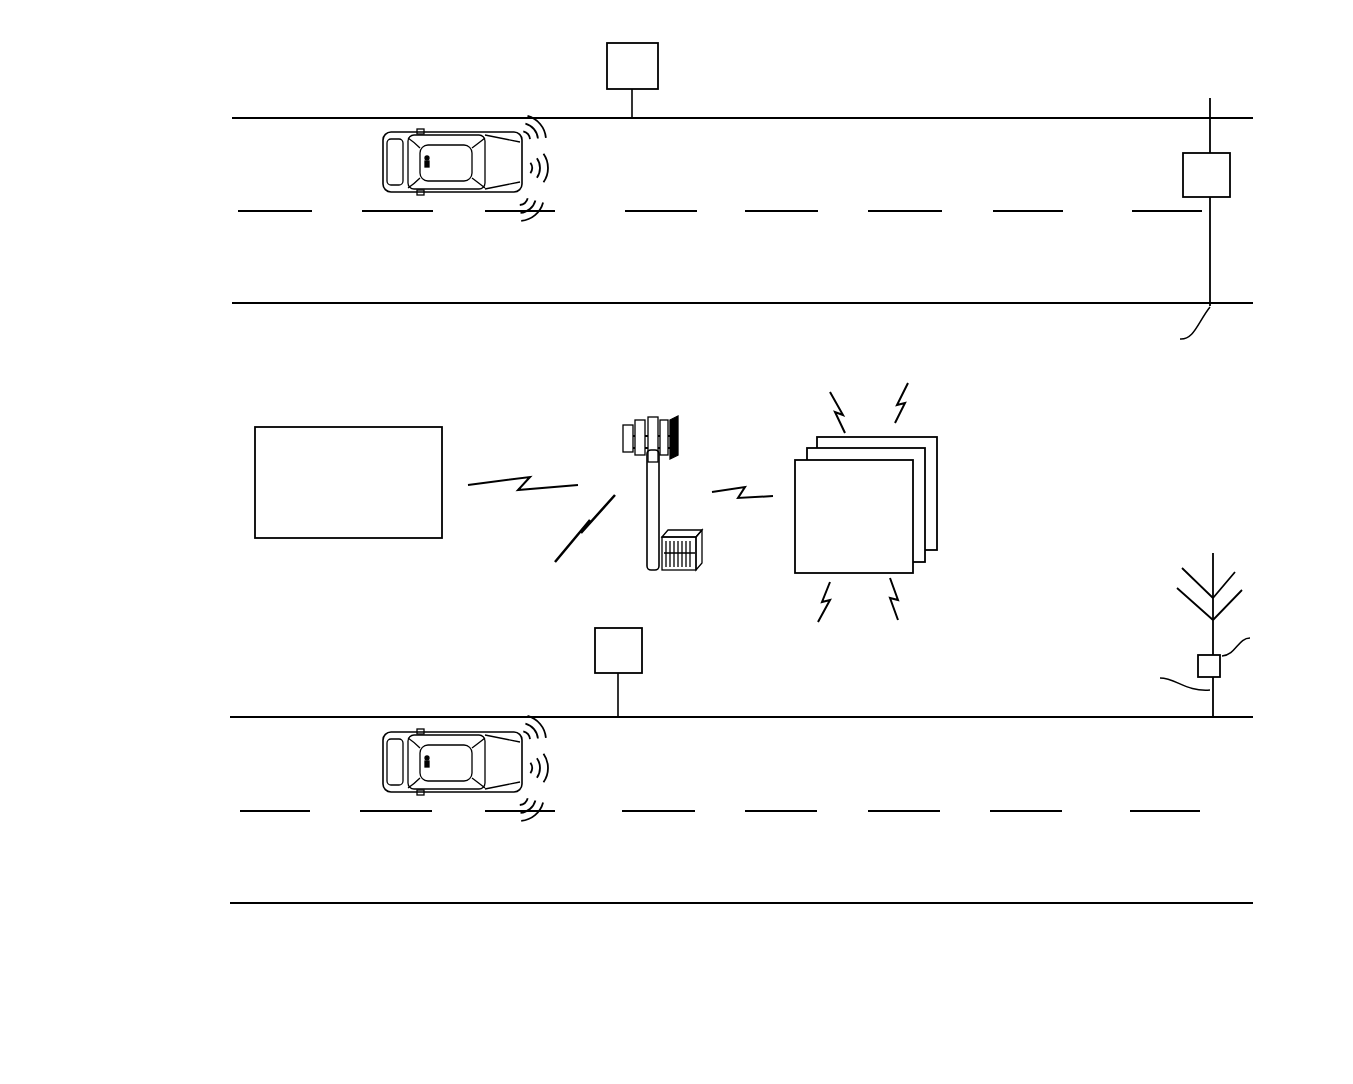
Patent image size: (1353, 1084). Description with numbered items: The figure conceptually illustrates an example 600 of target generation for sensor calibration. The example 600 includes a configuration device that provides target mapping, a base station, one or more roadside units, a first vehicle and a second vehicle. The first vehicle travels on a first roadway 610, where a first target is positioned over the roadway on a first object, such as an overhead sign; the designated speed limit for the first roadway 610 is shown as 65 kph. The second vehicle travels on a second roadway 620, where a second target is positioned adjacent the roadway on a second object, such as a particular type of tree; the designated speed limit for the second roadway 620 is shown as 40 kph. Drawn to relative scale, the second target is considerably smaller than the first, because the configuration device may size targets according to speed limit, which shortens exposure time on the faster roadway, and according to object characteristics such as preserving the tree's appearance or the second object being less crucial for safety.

The example 600 is at (226, 86).
The first roadway 610 is at (937, 103).
The second roadway 620 is at (838, 703).
The designated speed limit for the first roadway 65 is at (632, 80).
The designated speed limit for the second roadway 40 is at (618, 672).